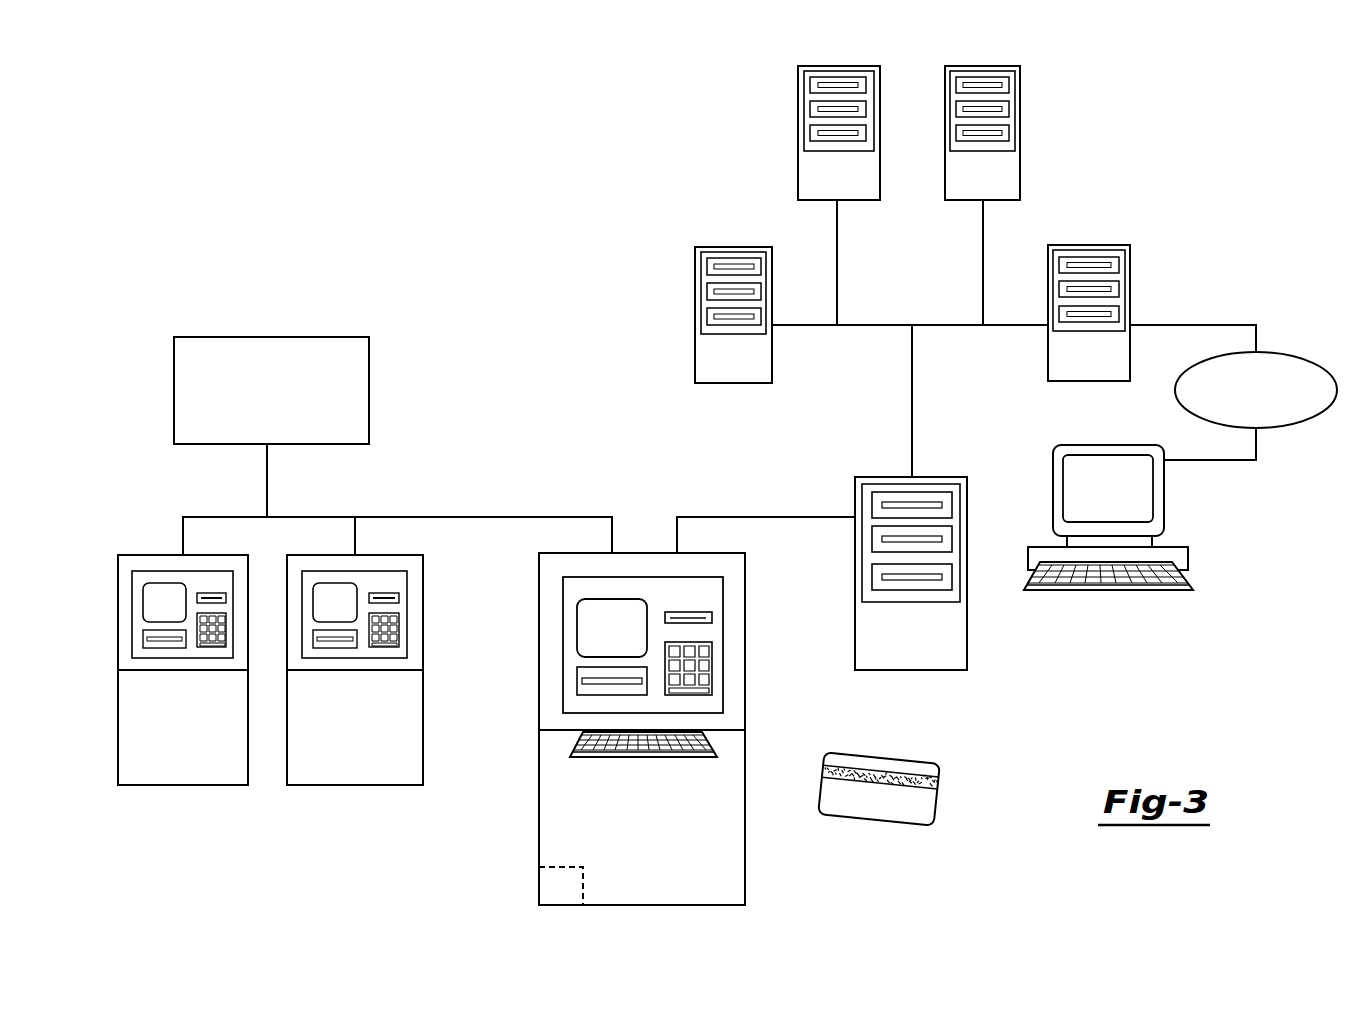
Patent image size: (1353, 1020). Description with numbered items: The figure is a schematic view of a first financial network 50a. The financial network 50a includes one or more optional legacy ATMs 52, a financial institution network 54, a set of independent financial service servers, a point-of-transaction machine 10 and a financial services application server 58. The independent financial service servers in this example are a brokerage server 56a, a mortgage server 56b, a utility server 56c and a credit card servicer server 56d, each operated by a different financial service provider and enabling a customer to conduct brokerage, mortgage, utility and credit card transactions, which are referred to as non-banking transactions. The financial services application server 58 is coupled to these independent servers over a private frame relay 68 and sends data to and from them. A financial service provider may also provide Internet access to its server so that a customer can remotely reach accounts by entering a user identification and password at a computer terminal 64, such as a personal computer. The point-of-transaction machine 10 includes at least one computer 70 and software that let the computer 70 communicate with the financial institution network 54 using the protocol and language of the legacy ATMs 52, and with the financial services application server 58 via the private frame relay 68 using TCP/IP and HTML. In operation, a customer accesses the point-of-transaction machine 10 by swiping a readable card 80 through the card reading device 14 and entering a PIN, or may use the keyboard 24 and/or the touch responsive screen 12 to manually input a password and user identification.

The point-of-transaction machine 10 is at (663, 739).
The touch responsive screen 12 is at (588, 628).
The card reading device 14 is at (697, 618).
The keyboard 24 is at (630, 760).
The financial network 50a is at (663, 729).
The legacy ATMs 52 is at (197, 787).
The financial institution network 54 is at (208, 305).
The brokerage server 56a is at (1130, 255).
The mortgage server 56b is at (1020, 96).
The utility server 56c is at (798, 133).
The credit card servicer server 56d is at (772, 247).
The financial services application server 58 is at (979, 656).
The computer terminal 64 is at (1215, 515).
The private frame relay 68 is at (912, 415).
The computer 70 is at (552, 888).
The readable card 80 is at (877, 812).